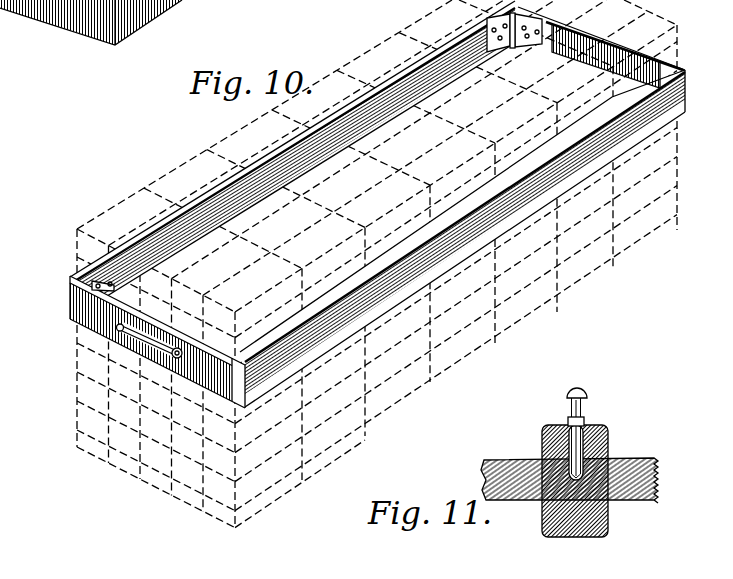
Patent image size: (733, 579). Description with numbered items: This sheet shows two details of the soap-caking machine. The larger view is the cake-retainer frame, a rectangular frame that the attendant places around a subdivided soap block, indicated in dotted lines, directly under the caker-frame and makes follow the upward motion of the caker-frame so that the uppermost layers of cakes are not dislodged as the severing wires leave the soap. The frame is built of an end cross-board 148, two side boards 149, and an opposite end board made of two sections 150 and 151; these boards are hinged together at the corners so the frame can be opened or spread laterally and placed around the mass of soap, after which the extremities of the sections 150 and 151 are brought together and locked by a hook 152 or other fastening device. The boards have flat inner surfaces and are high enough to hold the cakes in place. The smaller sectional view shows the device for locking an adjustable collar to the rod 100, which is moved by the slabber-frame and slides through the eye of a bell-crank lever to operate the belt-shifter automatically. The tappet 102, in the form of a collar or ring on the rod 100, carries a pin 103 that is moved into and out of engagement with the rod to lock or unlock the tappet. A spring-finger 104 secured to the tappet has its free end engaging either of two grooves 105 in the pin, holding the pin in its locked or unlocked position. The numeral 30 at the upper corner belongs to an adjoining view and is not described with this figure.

In FIG. 10, the slab 30 is at (72, 7).
In FIG. 10, the end cross-board 148 is at (586, 47).
In FIG. 10, the side boards 149 is at (377, 204).
In FIG. 10, the end board section 150 is at (70, 333).
In FIG. 10, the end board section 151 is at (200, 381).
In FIG. 10, the hook 152 is at (143, 348).
In FIG. 11, the rod 100 is at (652, 456).
In FIG. 11, the tappet 102 is at (575, 491).
In FIG. 11, the pin 103 is at (587, 393).
In FIG. 11, the spring-finger 104 is at (585, 423).
In FIG. 11, the grooves 105 is at (541, 430).